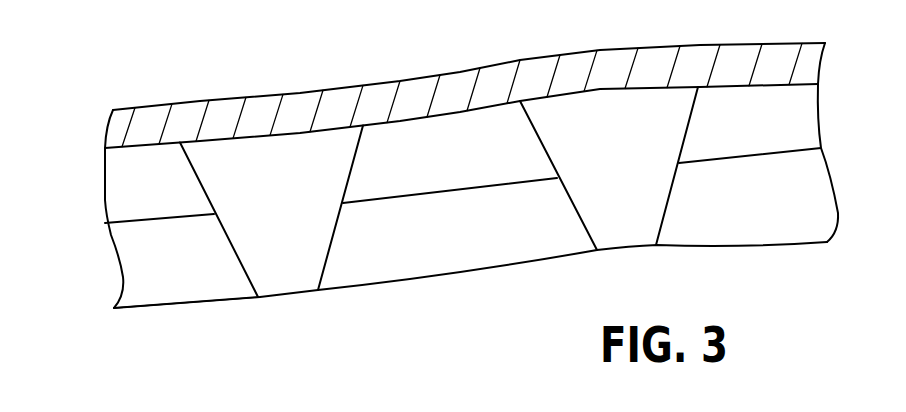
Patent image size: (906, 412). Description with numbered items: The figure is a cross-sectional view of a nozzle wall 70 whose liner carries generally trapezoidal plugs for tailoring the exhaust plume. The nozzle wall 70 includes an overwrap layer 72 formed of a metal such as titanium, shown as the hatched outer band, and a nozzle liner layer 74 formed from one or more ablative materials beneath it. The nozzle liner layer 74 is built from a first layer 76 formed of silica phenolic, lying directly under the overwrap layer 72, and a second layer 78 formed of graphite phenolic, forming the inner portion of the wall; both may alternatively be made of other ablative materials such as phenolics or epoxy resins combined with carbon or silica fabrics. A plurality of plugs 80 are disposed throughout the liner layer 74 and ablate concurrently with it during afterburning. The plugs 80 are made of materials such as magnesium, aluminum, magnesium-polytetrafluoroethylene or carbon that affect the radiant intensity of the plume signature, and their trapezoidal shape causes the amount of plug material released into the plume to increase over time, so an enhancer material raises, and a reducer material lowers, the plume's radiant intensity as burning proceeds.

The nozzle wall 70 is at (132, 62).
The overwrap layer 72 is at (104, 142).
The nozzle liner layer 74 is at (134, 325).
The first layer 76 is at (105, 203).
The second layer 78 is at (121, 280).
The plugs 80 is at (296, 229).